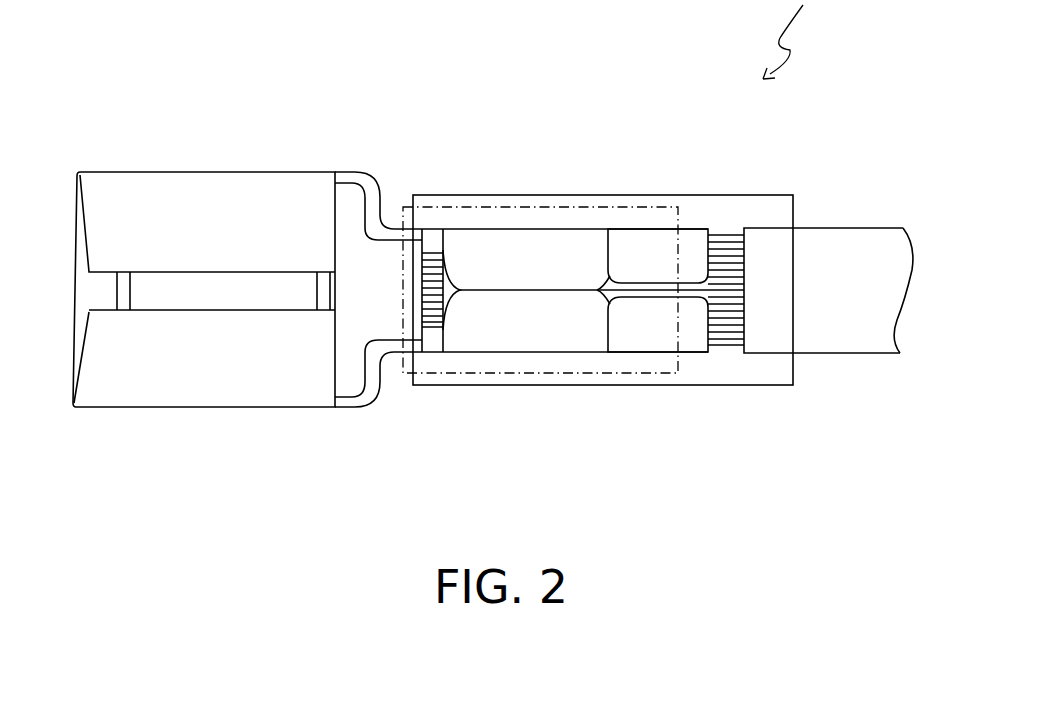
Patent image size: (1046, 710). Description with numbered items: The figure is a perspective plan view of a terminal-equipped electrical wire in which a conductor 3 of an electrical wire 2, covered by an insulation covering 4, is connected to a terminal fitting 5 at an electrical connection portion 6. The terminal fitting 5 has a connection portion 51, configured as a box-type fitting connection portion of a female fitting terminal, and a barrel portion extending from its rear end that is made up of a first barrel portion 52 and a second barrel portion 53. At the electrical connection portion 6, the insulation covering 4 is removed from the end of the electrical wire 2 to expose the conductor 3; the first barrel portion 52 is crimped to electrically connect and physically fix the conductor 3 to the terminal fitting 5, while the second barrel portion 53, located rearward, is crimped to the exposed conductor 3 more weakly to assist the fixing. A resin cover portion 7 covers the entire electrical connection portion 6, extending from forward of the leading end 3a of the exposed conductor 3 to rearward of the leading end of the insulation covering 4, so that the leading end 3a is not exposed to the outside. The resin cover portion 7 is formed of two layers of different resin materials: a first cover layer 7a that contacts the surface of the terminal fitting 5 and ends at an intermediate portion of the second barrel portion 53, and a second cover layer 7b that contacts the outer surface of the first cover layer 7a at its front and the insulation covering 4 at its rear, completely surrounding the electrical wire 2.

The electrical wire 2 is at (853, 209).
The conductor 3 is at (608, 297).
The leading end of the exposed conductor 3a is at (430, 307).
The insulation covering 4 is at (830, 343).
The terminal fitting 5 is at (350, 412).
The connection portion 51 is at (207, 195).
The first barrel portion 52 is at (515, 323).
The second barrel portion 53 is at (657, 340).
The electrical connection portion 6 is at (557, 228).
The resin cover portion 7 is at (548, 95).
The first cover layer 7a is at (450, 205).
The second cover layer 7b is at (525, 195).